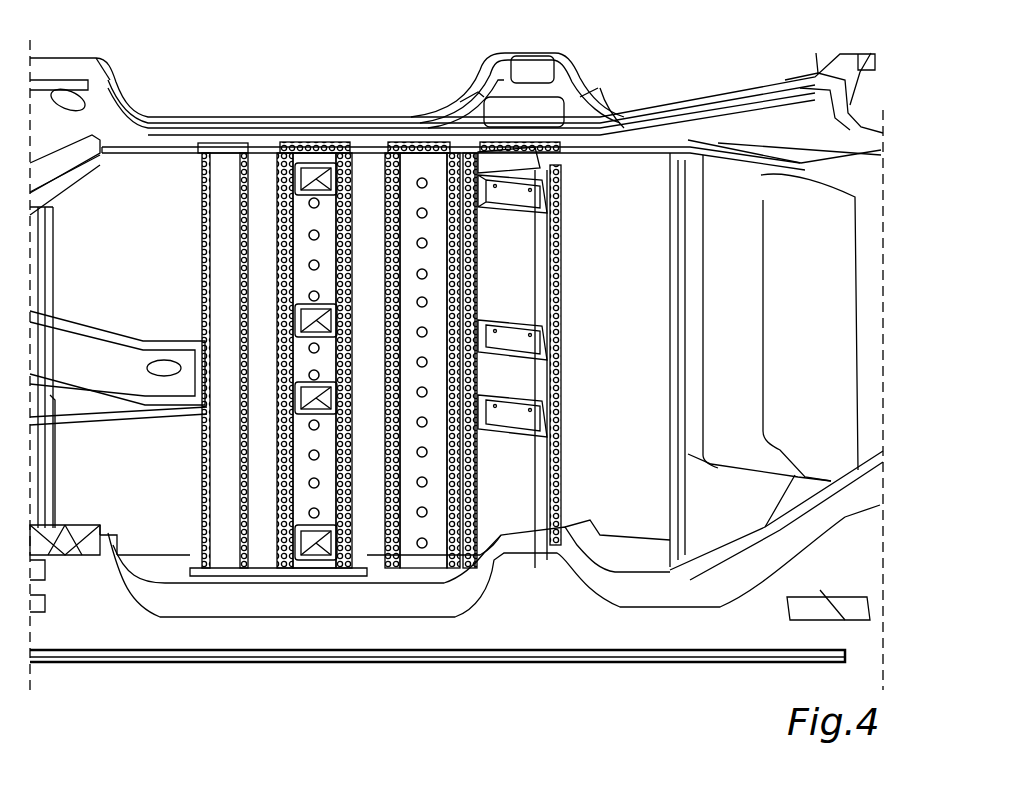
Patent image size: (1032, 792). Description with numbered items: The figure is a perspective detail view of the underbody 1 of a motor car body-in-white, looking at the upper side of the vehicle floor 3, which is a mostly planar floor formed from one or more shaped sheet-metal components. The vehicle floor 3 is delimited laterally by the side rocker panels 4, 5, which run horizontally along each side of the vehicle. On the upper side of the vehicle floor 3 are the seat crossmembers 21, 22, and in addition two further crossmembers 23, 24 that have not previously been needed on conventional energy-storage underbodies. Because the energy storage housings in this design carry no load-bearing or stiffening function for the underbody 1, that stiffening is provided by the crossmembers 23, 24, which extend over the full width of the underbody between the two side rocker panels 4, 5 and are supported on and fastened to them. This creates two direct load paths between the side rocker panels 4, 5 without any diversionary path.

The underbody 1 is at (668, 91).
The vehicle floor 3 is at (263, 541).
The side rocker panel 4 is at (399, 633).
The side rocker panel 5 is at (601, 173).
The seat crossmember 21 is at (325, 207).
The seat crossmember 22 is at (510, 267).
The crossmember 23 is at (213, 200).
The crossmember 24 is at (432, 203).